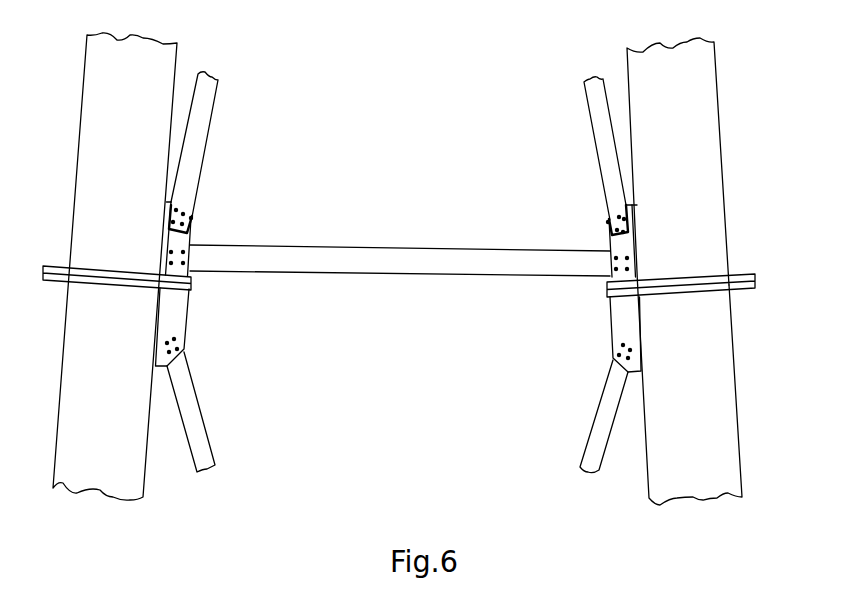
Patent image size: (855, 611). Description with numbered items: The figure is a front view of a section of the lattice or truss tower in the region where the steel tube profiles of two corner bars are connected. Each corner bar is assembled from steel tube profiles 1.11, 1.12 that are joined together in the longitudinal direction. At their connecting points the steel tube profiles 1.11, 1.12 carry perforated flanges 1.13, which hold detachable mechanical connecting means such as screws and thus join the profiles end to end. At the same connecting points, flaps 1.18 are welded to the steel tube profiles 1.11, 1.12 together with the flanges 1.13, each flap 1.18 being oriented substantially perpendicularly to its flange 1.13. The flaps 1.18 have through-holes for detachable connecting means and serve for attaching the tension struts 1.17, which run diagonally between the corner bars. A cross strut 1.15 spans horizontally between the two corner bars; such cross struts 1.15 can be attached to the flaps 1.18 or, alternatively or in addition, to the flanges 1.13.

The steel tube profile 1.11 is at (710, 413).
The steel tube profile 1.12 is at (697, 124).
The perforated flange 1.13 is at (745, 273).
The cross strut 1.15 is at (448, 260).
The tension strut 1.17 is at (604, 145).
The flap 1.18 is at (612, 248).